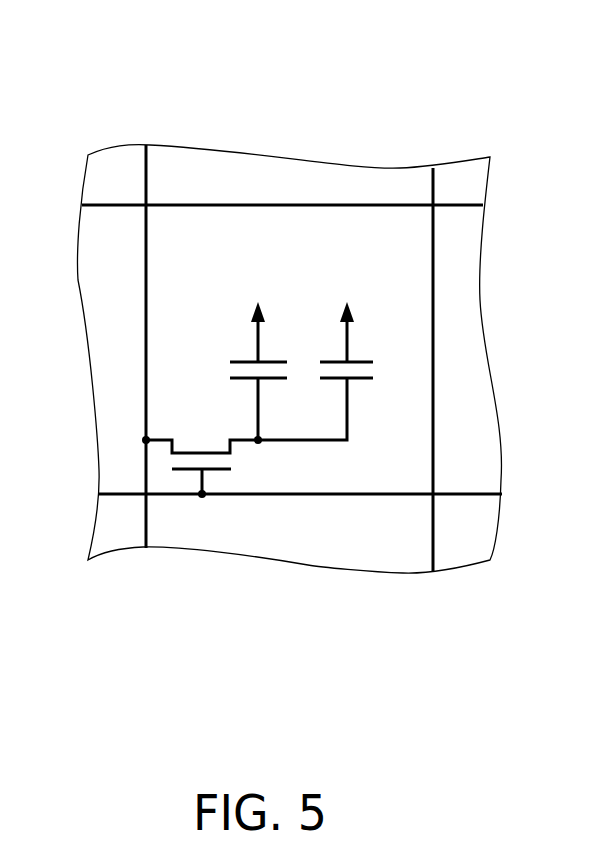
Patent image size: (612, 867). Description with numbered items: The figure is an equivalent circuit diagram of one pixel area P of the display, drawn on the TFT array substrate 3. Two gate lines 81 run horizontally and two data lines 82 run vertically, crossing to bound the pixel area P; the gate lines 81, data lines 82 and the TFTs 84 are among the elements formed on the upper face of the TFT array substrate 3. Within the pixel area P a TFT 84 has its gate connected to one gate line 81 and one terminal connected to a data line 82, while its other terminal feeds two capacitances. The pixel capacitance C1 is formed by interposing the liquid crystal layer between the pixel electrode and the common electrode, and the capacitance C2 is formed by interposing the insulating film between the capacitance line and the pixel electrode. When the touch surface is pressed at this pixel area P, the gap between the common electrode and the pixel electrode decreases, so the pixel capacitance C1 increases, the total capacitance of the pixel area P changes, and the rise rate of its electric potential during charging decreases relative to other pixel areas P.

The TFT array substrate 3 is at (310, 568).
The pixel area P is at (103, 92).
The data line 82 is at (147, 181).
The gate line 81 is at (113, 204).
The TFT 84 is at (195, 433).
The pixel capacitance C1 is at (236, 354).
The capacitance C2 is at (369, 357).